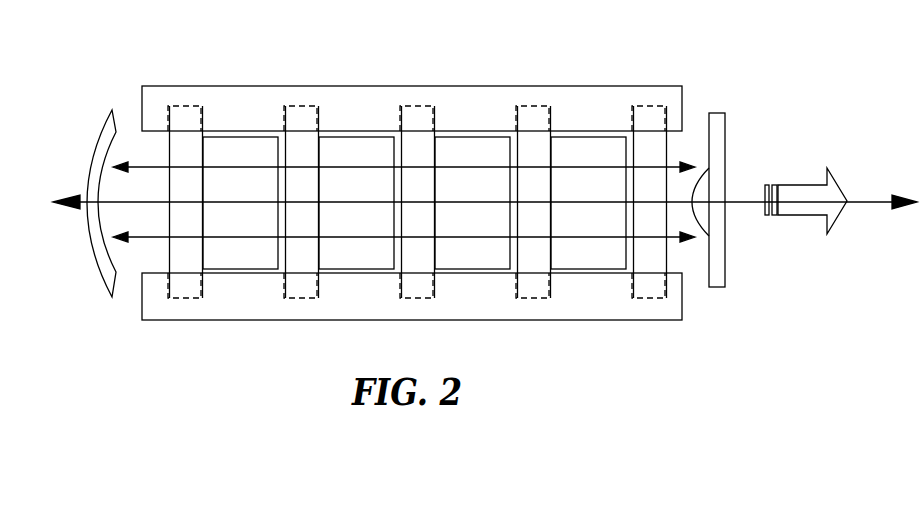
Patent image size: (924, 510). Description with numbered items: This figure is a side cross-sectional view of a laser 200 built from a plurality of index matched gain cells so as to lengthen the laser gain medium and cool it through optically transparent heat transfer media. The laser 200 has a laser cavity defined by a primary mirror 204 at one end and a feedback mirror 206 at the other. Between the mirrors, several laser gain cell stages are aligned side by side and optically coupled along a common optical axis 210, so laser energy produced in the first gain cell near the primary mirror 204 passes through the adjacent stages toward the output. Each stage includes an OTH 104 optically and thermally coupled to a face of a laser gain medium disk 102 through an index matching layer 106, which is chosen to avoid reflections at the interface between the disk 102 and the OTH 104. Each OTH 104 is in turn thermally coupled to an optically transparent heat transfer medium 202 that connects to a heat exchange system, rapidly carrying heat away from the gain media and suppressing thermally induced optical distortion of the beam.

The laser 200 is at (776, 16).
The optically transparent heat transfer medium 202 is at (667, 86).
The laser gain medium disk 102 is at (244, 137).
The OTH 104 is at (183, 260).
The index matching layer 106 is at (203, 106).
The primary mirror 204 is at (93, 260).
The feedback mirror 206 is at (725, 134).
The common optical axis 210 is at (869, 201).